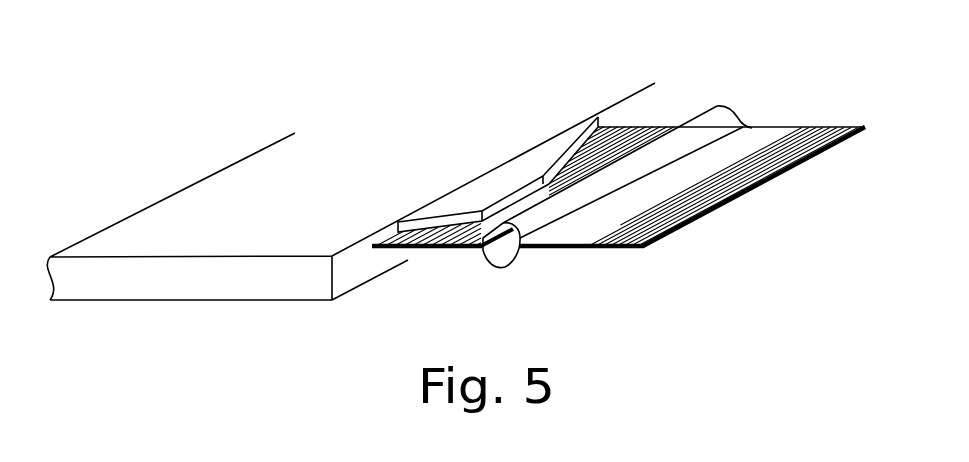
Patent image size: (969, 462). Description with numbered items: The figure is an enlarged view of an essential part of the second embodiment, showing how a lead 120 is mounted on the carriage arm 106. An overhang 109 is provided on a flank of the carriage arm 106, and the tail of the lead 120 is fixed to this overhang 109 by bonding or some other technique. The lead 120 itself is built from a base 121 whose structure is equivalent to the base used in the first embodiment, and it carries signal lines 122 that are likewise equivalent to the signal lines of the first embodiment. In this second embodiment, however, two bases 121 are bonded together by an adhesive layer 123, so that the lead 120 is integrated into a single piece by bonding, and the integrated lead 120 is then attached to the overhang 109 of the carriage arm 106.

The carriage arm 106 is at (220, 197).
The overhang 109 is at (497, 182).
The lead 120 is at (778, 198).
The base 121 is at (523, 255).
The signal lines 122 is at (807, 128).
The adhesive layer 123 is at (575, 250).